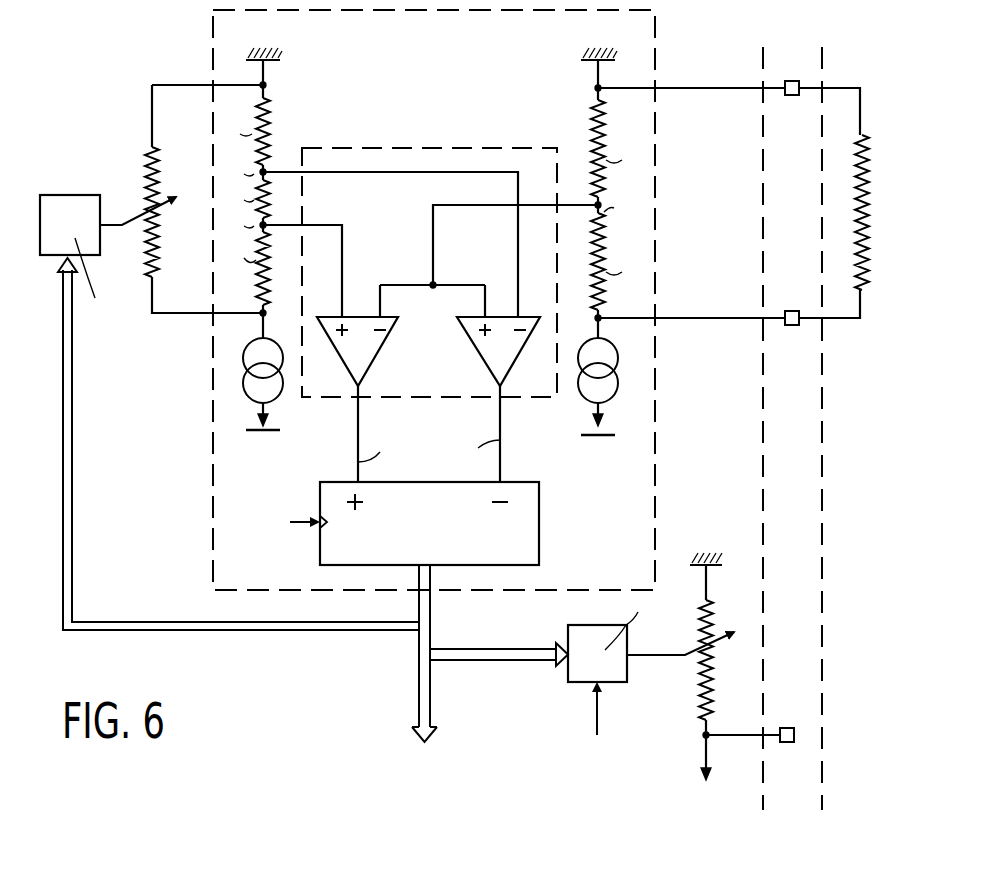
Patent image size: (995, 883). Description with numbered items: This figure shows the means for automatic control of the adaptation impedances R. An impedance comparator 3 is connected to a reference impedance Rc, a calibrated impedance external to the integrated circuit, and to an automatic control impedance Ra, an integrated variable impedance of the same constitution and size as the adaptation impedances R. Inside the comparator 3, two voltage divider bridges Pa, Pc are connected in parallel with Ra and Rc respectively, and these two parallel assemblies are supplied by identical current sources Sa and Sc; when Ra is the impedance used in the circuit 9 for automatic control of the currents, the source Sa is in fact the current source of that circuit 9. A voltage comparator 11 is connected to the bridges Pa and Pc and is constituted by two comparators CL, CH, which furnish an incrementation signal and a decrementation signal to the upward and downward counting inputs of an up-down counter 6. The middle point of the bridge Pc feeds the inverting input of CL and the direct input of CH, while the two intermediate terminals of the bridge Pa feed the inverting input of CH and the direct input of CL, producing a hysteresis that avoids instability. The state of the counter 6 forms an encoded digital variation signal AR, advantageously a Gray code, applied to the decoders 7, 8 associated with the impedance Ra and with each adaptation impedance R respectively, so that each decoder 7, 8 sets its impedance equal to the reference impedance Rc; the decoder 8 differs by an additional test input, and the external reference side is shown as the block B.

The impedance comparator 3 is at (212, 45).
The up-down counter 6 is at (540, 546).
The decoder 7 is at (65, 195).
The decoder 8 is at (568, 684).
The circuit for automatic control of the currents 9 is at (174, 199).
The voltage comparator 11 is at (429, 253).
The external block B is at (733, 413).
The voltage divider bridge Pa is at (298, 126).
The voltage divider bridge Pc is at (560, 128).
The automatic control impedance Ra is at (145, 168).
The reference impedance Rc is at (858, 222).
The adaptation impedance R is at (698, 630).
The current source Sa is at (243, 378).
The current source Sc is at (618, 378).
The comparator CL is at (386, 340).
The comparator CH is at (470, 345).
The digital variation signal AR is at (432, 608).